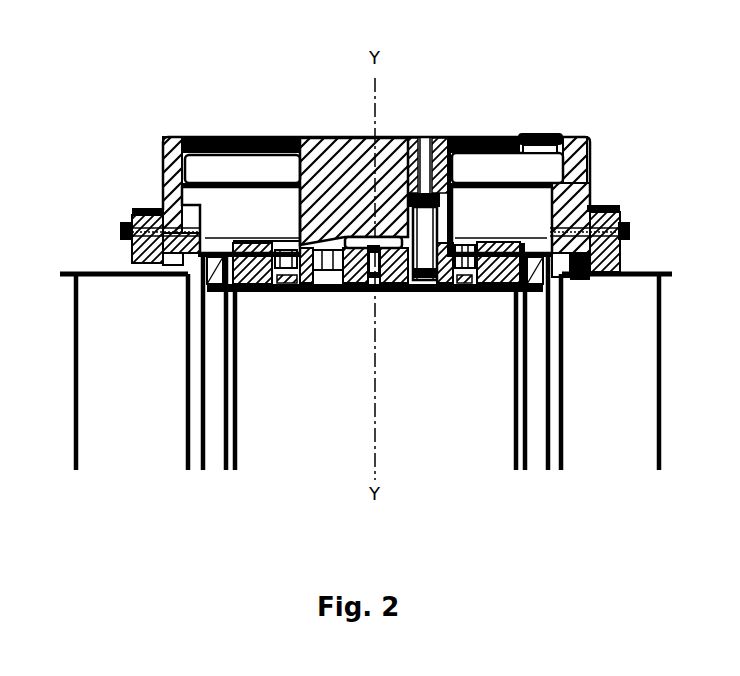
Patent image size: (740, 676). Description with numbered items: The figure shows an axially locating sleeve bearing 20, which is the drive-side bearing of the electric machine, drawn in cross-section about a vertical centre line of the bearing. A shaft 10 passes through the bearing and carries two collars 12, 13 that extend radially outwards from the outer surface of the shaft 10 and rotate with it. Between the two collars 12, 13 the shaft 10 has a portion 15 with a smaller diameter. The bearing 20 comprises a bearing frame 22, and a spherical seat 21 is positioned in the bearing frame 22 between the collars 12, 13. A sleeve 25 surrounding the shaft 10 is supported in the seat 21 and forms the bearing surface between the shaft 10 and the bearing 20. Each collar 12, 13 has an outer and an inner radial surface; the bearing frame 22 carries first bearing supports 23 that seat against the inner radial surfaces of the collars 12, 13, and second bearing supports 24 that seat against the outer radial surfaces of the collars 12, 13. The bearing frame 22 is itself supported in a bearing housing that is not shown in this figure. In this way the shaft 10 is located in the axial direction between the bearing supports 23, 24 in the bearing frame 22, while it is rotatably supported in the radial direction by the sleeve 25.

The axially locating sleeve bearing 20 is at (103, 64).
The bearing frame 22 is at (331, 150).
The sleeve 25 is at (450, 290).
The first bearing supports 23 is at (256, 290).
The spherical seat 21 is at (355, 290).
The portion with a smaller diameter 15 is at (415, 290).
The second bearing supports 24 is at (132, 250).
The collar 12 is at (205, 277).
The collar 13 is at (548, 278).
The shaft 10 is at (142, 410).